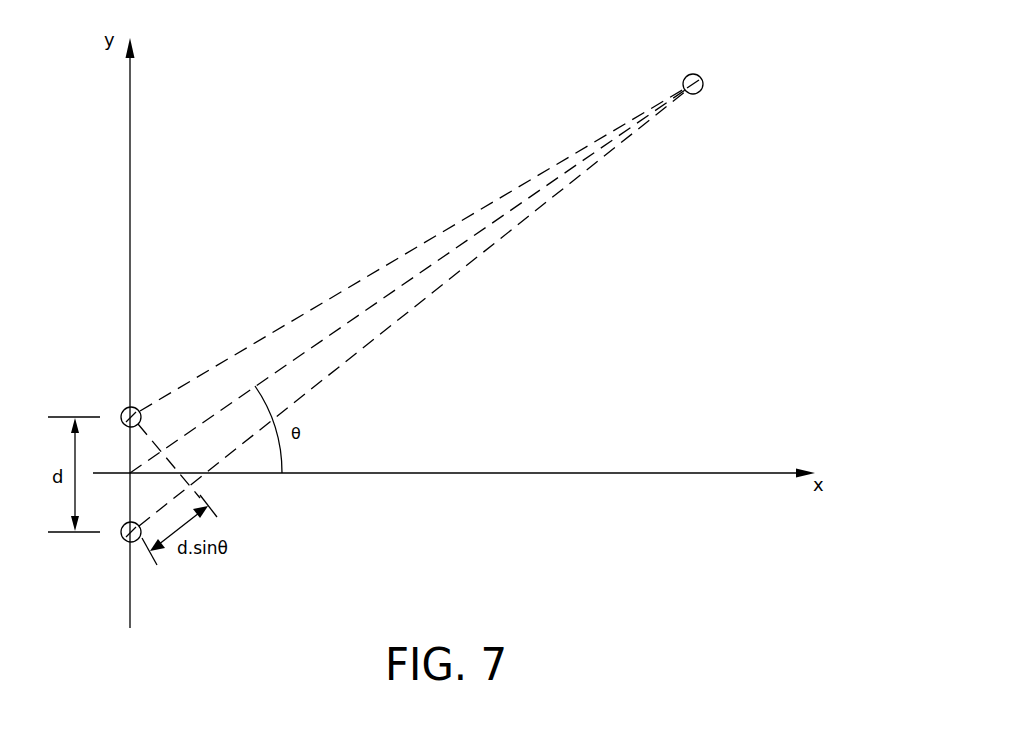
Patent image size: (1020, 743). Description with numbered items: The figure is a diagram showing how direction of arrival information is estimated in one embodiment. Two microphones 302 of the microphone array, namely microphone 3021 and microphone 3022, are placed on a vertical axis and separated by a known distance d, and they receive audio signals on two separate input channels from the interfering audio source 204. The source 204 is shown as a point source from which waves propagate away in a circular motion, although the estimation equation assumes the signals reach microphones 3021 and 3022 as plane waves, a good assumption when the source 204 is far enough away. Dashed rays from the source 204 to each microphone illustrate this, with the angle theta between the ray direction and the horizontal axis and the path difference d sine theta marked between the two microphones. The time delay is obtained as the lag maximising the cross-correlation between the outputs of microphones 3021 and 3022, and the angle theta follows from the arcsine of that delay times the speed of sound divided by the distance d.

The interfering audio source 204 is at (703, 84).
The microphones 302 is at (95, 475).
The first microphone 3021 is at (120, 430).
The second microphone 3022 is at (120, 518).